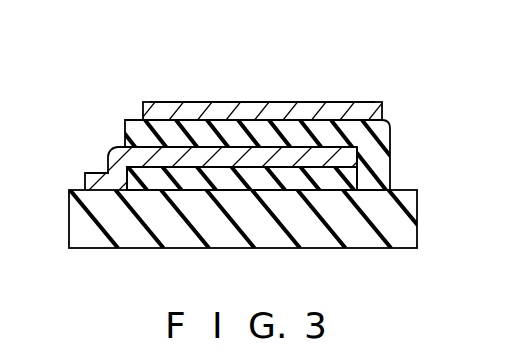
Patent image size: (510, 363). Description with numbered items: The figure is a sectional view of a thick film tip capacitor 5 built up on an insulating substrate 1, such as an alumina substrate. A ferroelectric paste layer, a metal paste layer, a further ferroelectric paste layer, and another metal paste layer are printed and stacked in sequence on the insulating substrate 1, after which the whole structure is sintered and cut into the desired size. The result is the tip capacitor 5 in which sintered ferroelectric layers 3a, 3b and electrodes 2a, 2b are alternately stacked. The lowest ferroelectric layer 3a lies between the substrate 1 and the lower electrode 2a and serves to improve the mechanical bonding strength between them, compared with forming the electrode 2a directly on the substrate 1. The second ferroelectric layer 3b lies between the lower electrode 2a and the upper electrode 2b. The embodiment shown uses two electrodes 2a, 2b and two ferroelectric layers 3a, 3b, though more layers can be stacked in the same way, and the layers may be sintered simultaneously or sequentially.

The insulating substrate 1 is at (413, 216).
The lower electrode 2a is at (353, 153).
The other electrode 2b is at (368, 104).
The ferroelectric layer 3a is at (355, 177).
The ferroelectric layer 3b is at (388, 130).
The tip capacitor 5 is at (323, 100).